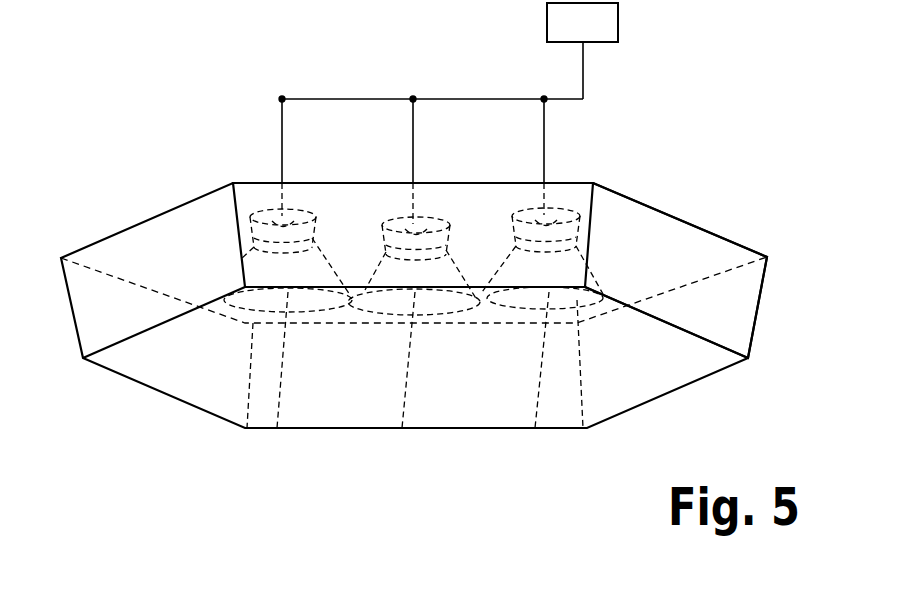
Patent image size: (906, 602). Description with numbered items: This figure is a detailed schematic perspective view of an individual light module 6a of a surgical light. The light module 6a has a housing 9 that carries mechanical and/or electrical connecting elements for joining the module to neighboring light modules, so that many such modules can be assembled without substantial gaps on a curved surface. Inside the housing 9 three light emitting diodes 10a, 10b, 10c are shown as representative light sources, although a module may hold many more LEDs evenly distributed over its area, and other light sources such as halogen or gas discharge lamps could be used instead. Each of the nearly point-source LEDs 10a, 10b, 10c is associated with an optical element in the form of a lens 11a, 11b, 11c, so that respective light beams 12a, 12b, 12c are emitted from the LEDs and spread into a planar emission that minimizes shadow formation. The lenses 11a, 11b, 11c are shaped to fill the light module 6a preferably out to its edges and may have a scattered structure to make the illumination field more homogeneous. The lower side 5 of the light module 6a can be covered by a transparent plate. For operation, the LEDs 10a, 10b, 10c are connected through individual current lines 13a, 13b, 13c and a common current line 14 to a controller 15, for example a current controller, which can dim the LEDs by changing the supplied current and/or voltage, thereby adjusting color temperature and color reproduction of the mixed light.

The lower side 5 is at (462, 388).
The light module 6a is at (594, 158).
The housing 9 is at (693, 240).
The LED 10a is at (282, 214).
The LED 10b is at (422, 220).
The LED 10c is at (543, 212).
The lens 11a is at (276, 428).
The lens 11b is at (404, 428).
The lens 11c is at (538, 428).
The light beam 12a is at (228, 300).
The light beam 12b is at (376, 290).
The light beam 12c is at (585, 278).
The current line 13a is at (281, 118).
The current line 13b is at (414, 125).
The current line 13c is at (543, 122).
The current line 14 is at (322, 97).
The controller 15 is at (608, 24).